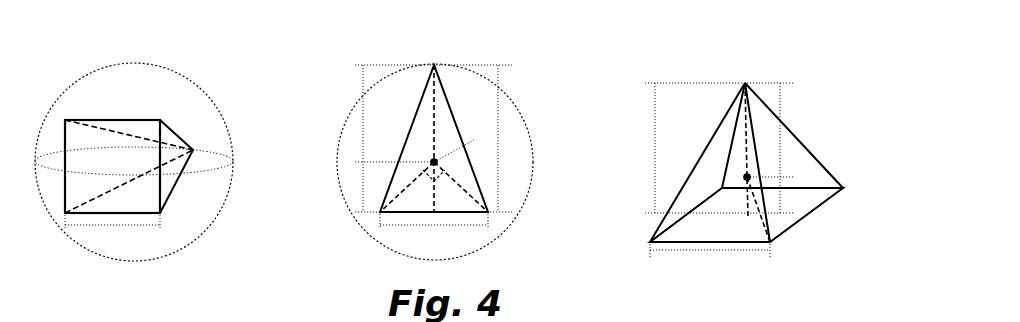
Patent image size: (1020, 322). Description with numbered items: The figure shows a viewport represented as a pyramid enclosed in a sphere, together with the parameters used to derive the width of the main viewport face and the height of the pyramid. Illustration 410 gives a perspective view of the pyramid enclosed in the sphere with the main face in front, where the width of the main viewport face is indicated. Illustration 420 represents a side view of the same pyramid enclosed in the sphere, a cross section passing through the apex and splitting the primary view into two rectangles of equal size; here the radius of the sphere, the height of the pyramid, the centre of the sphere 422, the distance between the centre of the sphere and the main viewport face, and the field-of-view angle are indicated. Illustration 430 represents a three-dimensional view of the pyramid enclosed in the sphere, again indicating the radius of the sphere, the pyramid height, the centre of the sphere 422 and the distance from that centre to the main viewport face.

The illustration 410 is at (234, 101).
The illustration 420 is at (538, 101).
The centre of the sphere 422 is at (438, 162).
The illustration 430 is at (822, 101).